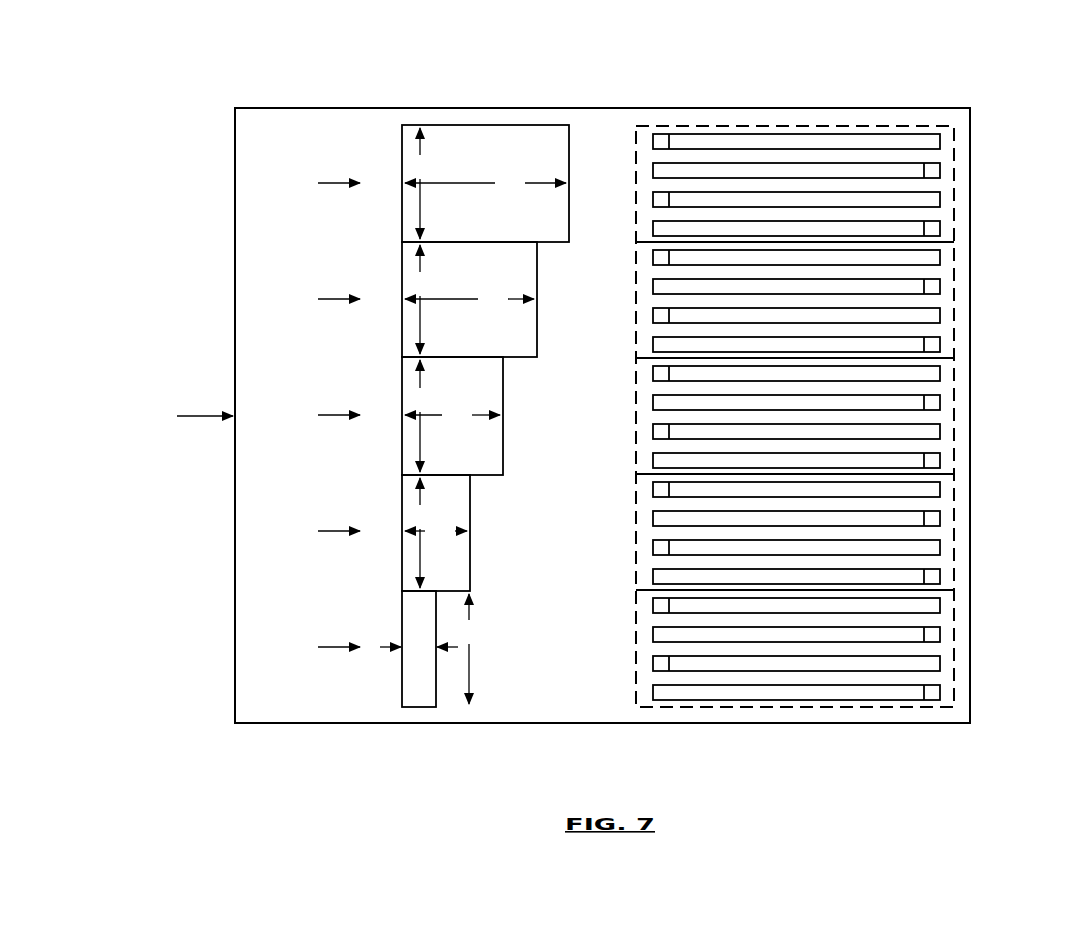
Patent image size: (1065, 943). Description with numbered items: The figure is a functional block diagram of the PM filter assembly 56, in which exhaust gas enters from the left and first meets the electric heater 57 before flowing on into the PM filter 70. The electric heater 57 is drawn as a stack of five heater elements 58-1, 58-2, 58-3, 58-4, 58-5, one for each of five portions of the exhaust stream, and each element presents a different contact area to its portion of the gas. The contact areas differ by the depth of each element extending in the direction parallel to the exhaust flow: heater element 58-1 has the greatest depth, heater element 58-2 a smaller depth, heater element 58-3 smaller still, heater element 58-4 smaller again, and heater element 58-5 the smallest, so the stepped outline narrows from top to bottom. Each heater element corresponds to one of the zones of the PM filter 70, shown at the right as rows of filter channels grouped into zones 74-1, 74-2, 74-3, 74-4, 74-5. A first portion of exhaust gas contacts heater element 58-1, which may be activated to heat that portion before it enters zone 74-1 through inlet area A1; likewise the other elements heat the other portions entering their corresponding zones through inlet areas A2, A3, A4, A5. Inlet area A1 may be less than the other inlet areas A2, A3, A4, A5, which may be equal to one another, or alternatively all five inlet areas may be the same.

The PM filter assembly 56 is at (133, 56).
The electric heater 57 is at (442, 88).
The first heater element 58-1 is at (402, 158).
The second heater element 58-2 is at (402, 274).
The third heater element 58-3 is at (402, 390).
The fourth heater element 58-4 is at (402, 506).
The fifth heater element 58-5 is at (402, 622).
The PM filter 70 is at (775, 88).
The first zone 74-1 is at (955, 184).
The second zone 74-2 is at (955, 300).
The third zone 74-3 is at (955, 416).
The fourth zone 74-4 is at (955, 532).
The fifth zone 74-5 is at (955, 648).
The first inlet area A1 is at (634, 183).
The second inlet area A2 is at (634, 299).
The third inlet area A3 is at (634, 415).
The fourth inlet area A4 is at (634, 531).
The fifth inlet area A5 is at (634, 647).